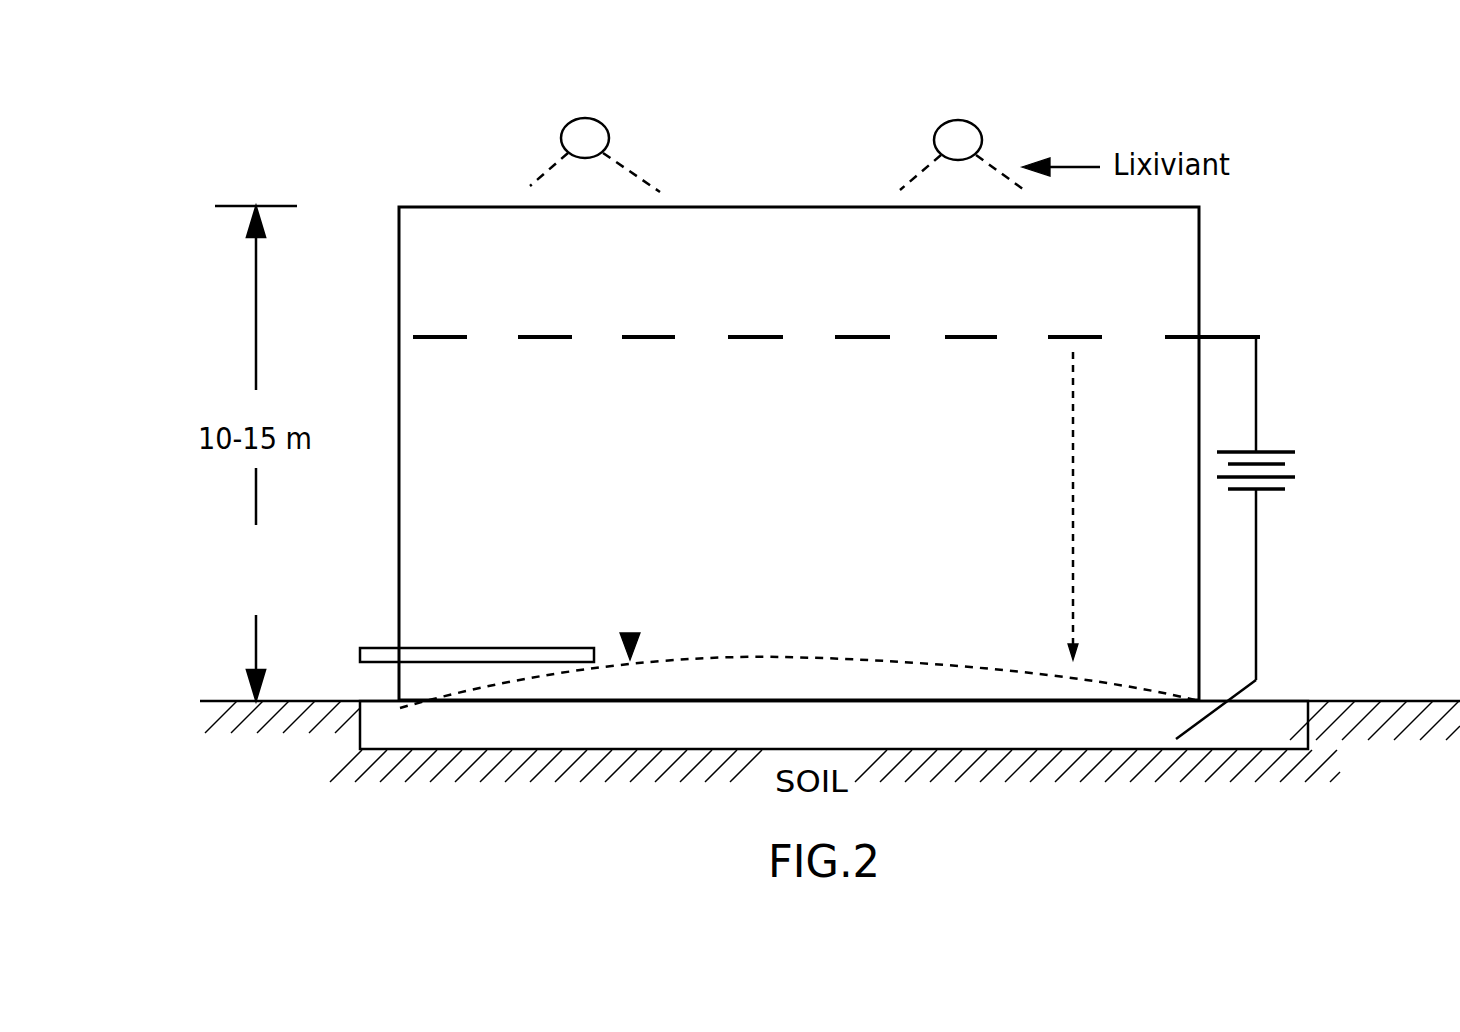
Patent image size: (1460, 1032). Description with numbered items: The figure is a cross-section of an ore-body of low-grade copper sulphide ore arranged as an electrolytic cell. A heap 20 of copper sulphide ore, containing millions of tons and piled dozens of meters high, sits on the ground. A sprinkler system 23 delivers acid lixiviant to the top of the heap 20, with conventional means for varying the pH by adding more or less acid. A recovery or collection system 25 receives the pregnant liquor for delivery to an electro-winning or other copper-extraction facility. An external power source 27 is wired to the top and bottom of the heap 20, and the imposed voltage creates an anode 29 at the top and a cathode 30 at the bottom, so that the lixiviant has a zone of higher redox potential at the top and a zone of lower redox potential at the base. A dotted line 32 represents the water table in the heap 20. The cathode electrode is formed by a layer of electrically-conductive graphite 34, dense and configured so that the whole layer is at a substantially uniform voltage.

The heap 20 is at (792, 406).
The sprinkler system 23 is at (958, 120).
The recovery or collection system 25 is at (360, 650).
The external power source 27 is at (1272, 450).
The anode 29 is at (945, 336).
The cathode 30 is at (1178, 737).
The dotted line 32 is at (933, 657).
The graphite layer 34 is at (960, 744).